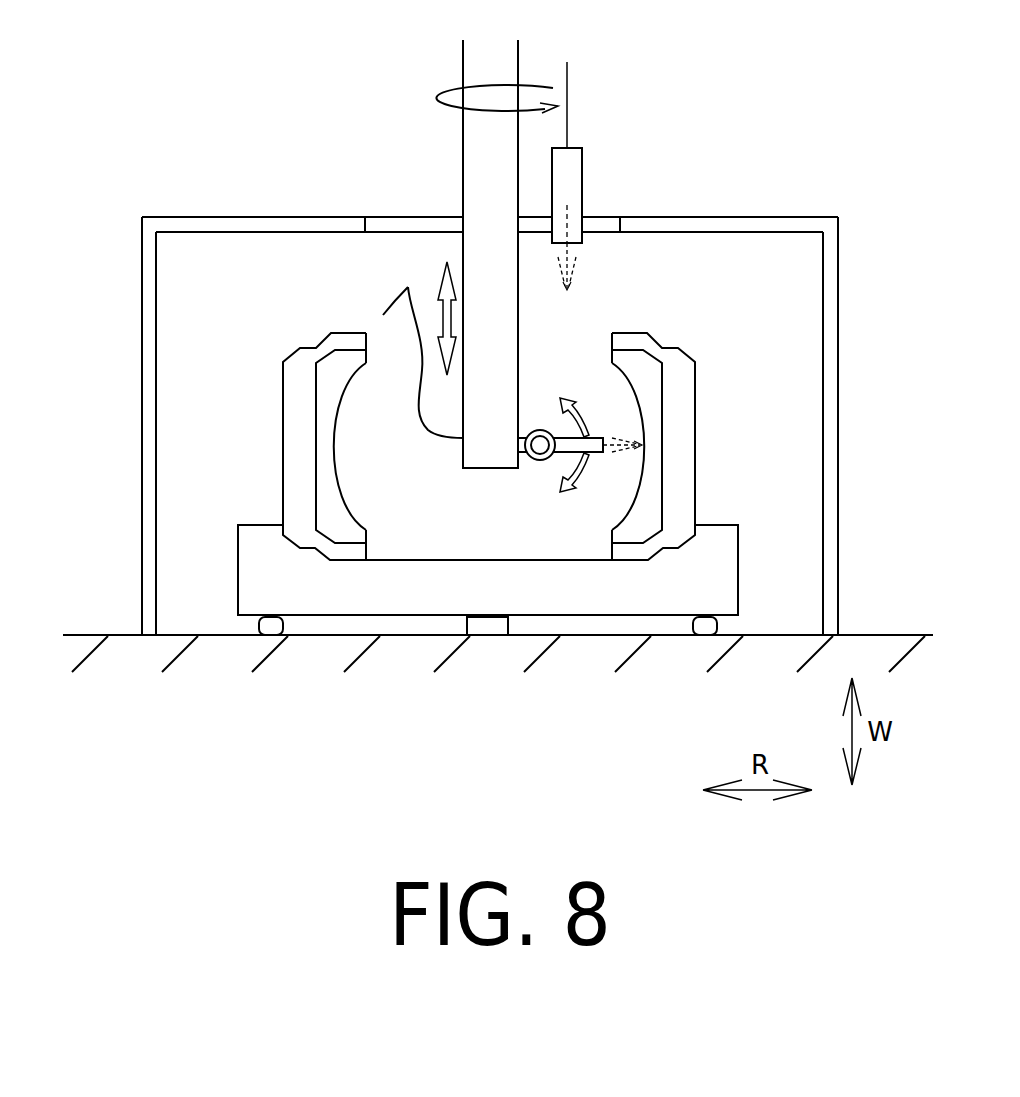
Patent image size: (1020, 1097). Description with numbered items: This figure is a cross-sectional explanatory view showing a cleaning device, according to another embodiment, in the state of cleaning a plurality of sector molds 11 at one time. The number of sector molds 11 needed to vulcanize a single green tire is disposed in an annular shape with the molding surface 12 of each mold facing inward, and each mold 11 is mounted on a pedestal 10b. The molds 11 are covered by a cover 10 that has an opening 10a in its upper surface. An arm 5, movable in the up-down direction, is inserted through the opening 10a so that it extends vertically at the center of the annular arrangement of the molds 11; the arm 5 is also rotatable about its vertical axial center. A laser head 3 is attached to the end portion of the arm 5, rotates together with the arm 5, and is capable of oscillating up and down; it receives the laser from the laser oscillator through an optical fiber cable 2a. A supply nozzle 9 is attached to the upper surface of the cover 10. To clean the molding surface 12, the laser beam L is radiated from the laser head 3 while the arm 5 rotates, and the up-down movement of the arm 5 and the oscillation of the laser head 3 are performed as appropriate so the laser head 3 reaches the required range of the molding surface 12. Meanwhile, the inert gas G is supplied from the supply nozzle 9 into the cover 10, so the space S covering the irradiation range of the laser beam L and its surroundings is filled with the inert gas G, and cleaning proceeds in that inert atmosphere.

The optical fiber cable 2a is at (402, 330).
The laser head 3 is at (568, 453).
The arm 5 is at (463, 160).
The supply nozzle 9 is at (576, 178).
The cover 10 is at (725, 230).
The opening 10a is at (368, 217).
The pedestal 10b is at (257, 533).
The sector mold 11 is at (293, 395).
The molding surface 12 is at (336, 443).
The inert gas G is at (567, 277).
The space S is at (605, 368).
The laser beam L is at (612, 457).